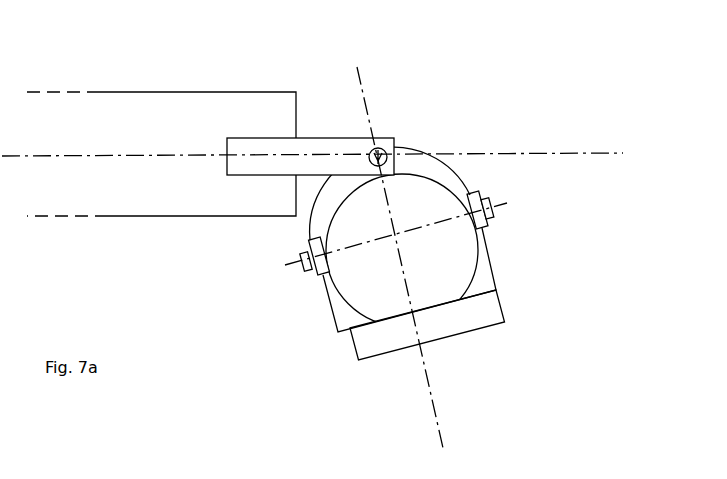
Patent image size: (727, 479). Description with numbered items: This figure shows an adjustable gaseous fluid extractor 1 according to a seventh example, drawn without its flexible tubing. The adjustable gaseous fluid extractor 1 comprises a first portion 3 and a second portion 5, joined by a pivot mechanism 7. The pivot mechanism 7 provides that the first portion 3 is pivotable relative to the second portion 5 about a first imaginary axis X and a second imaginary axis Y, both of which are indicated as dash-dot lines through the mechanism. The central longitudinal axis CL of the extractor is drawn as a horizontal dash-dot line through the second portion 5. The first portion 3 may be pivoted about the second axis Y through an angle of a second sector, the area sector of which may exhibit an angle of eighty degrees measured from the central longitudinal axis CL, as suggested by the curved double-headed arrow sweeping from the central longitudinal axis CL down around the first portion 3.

The adjustable gaseous fluid extractor 1 is at (520, 68).
The first portion 3 is at (472, 242).
The second portion 5 is at (355, 97).
The pivot mechanism 7 is at (487, 212).
The first imaginary axis X is at (283, 268).
The second axis Y is at (378, 134).
The central longitudinal axis CL is at (145, 157).